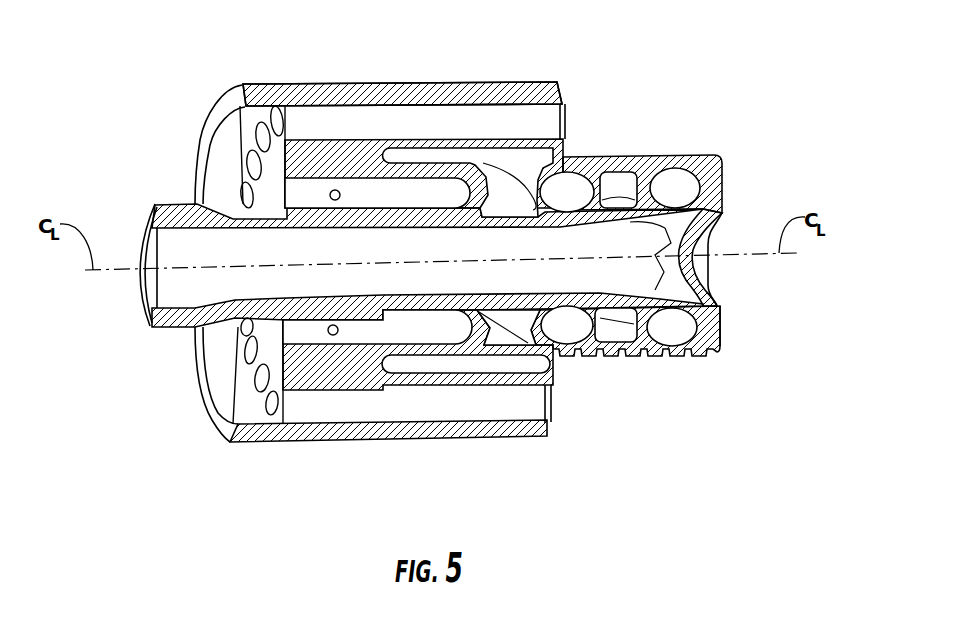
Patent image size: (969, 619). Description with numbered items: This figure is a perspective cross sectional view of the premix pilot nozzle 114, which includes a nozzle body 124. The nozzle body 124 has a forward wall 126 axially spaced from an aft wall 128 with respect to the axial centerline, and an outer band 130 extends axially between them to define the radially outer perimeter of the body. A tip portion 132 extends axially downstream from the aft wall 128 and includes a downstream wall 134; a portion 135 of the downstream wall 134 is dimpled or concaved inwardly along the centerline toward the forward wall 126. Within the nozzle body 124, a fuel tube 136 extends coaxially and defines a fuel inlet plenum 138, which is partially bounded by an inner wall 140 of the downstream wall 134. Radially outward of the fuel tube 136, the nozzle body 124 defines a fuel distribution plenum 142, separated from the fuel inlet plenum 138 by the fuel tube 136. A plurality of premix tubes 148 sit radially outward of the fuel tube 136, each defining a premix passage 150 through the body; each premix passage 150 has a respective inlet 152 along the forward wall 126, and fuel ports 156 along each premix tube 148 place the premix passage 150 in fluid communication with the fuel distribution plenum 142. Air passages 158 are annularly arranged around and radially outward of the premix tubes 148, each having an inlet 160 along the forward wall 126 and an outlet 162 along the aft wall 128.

The premix pilot nozzle 114 is at (693, 49).
The nozzle body 124 is at (423, 84).
The forward wall 126 is at (262, 203).
The aft wall 128 is at (560, 150).
The outer band 130 is at (505, 92).
The tip portion 132 is at (718, 146).
The downstream wall 134 is at (720, 323).
The portion of the downstream wall 135 is at (713, 275).
The fuel tube 136 is at (150, 323).
The fuel inlet plenum 138 is at (438, 292).
The inner wall 140 is at (657, 222).
The fuel distribution plenum 142 is at (527, 150).
The premix tubes 148 is at (413, 163).
The premix passages 150 is at (368, 185).
The inlets 152 is at (262, 183).
The fuel ports 156 is at (333, 190).
The air passages 158 is at (460, 403).
The inlet 160 is at (275, 408).
The outlet 162 is at (547, 405).